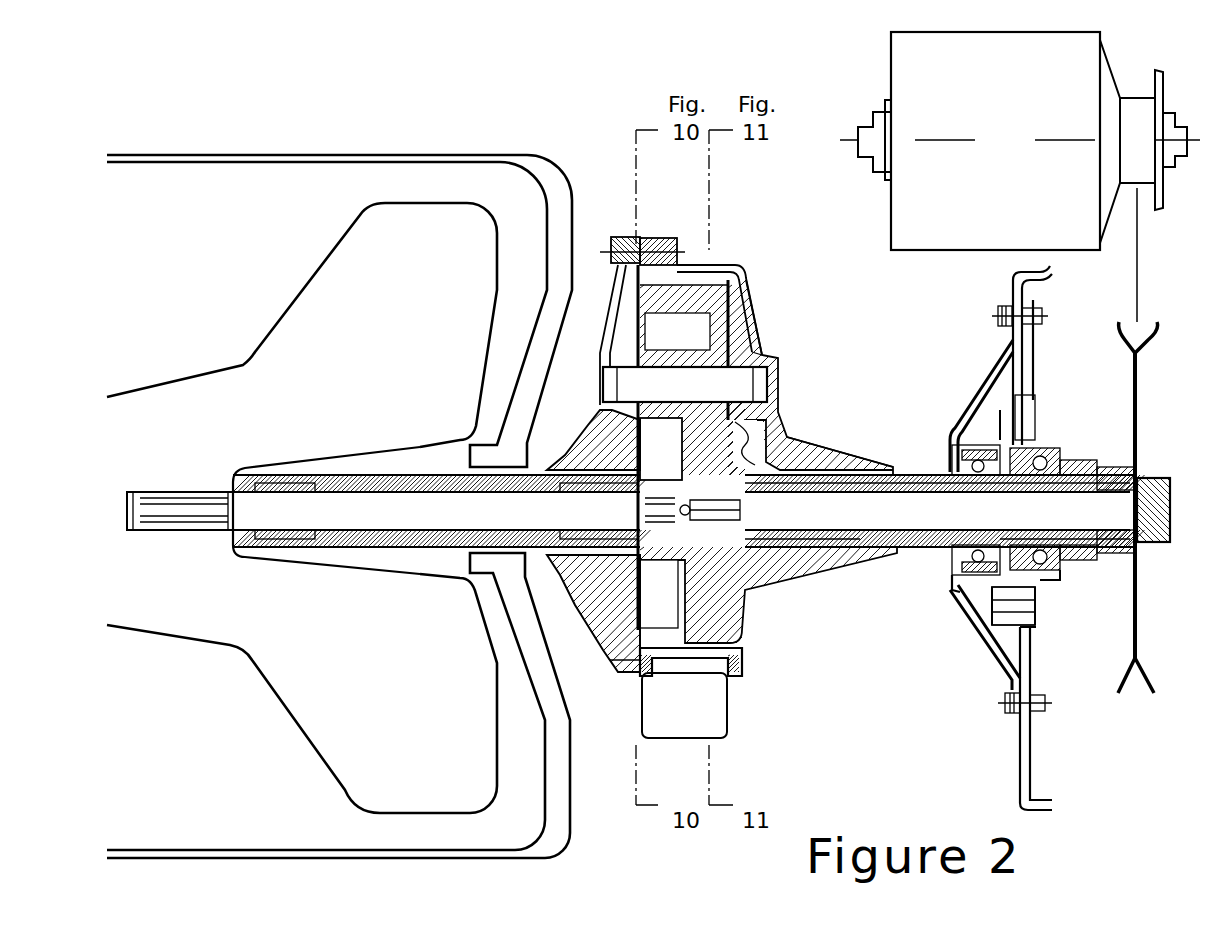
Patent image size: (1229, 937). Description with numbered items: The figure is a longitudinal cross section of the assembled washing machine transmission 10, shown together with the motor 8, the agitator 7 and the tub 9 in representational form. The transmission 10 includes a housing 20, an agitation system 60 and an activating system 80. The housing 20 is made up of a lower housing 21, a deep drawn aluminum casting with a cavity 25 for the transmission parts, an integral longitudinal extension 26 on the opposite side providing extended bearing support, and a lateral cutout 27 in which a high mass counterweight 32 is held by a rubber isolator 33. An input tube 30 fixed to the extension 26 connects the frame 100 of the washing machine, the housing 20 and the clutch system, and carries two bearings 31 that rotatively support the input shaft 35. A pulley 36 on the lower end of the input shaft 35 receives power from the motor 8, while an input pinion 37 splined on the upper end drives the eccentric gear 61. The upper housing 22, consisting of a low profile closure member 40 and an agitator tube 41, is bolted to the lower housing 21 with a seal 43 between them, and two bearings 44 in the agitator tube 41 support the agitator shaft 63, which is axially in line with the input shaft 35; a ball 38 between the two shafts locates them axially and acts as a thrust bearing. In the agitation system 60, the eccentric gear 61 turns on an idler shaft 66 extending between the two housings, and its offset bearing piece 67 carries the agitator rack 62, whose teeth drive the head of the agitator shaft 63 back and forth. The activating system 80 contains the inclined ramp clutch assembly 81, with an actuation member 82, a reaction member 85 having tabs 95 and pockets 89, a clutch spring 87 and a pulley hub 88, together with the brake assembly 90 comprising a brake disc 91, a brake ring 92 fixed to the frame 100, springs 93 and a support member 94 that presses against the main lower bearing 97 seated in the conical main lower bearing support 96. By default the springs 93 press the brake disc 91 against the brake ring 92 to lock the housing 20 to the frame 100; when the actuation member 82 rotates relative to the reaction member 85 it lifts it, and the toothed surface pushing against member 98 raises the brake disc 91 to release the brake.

The agitator 7 is at (497, 287).
The motor 8 is at (1001, 210).
The tub 9 is at (525, 172).
The transmission 10 is at (760, 206).
The housing 20 is at (763, 281).
The lower housing 21 is at (740, 600).
The upper housing 22 is at (610, 620).
The cavity 25 is at (677, 272).
The longitudinal extension 26 is at (822, 467).
The lateral cutout 27 is at (743, 664).
The input tube 30 is at (940, 475).
The bearings 31 is at (705, 512).
The counterweight 32 is at (695, 714).
The rubber isolator 33 is at (642, 675).
The input shaft 35 is at (1020, 512).
The pulley 36 is at (1137, 390).
The input pinion 37 is at (730, 580).
The ball 38 is at (672, 560).
The closure member 40 is at (573, 442).
The agitator tube 41 is at (403, 467).
The seal 43 is at (640, 240).
The bearings 44 is at (640, 512).
The agitation system 60 is at (615, 414).
The eccentric gear 61 is at (707, 350).
The agitator rack 62 is at (672, 441).
The agitator shaft 63 is at (545, 512).
The idler shaft 66 is at (760, 385).
The bearing piece 67 is at (630, 326).
The activating system 80 is at (966, 370).
The inclined ramp clutch assembly 81 is at (1055, 578).
The actuation member 82 is at (1050, 458).
The reaction member 85 is at (1040, 455).
The clutch spring 87 is at (1062, 462).
The pulley hub 88 is at (1140, 470).
The pockets 89 is at (1010, 440).
The brake assembly 90 is at (1060, 361).
The brake disc 91 is at (1005, 342).
The brake ring 92 is at (1028, 655).
The springs 93 is at (1020, 608).
The support member 94 is at (962, 590).
The tabs 95 is at (1012, 600).
The main lower bearing support 96 is at (985, 625).
The main lower bearing 97 is at (960, 562).
The member 98 is at (1005, 635).
The frame 100 is at (1025, 738).